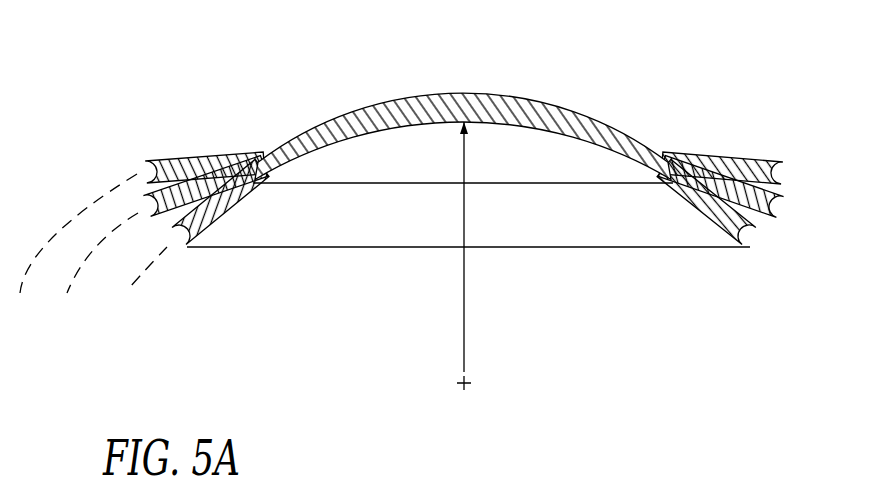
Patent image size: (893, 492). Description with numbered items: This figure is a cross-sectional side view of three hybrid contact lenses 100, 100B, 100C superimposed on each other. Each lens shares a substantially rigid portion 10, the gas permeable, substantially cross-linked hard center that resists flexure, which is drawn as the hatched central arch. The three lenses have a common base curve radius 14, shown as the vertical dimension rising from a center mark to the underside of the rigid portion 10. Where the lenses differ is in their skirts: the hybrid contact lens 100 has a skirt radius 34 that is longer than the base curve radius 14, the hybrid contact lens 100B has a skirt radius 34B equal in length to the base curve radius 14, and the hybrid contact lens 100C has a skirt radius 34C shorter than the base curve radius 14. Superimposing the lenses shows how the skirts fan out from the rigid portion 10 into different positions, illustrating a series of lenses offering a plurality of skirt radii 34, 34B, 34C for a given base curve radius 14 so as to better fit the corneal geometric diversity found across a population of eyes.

The substantially rigid portion 10 is at (468, 94).
The base curve radius 14 is at (465, 275).
The skirt radius 34 is at (25, 288).
The skirt radius 34B is at (90, 265).
The skirt radius 34C is at (163, 260).
The hybrid contact lens 100 is at (607, 88).
The hybrid contact lens 100B is at (463, 187).
The hybrid contact lens 100C is at (464, 201).